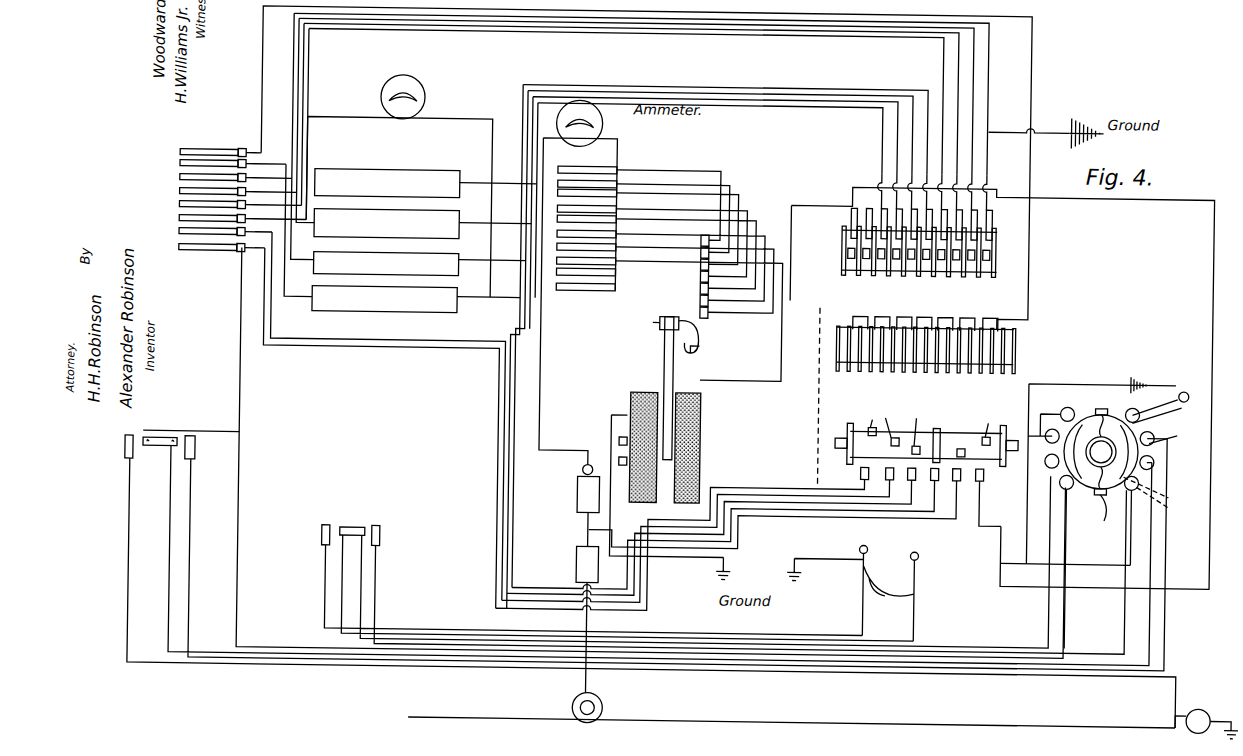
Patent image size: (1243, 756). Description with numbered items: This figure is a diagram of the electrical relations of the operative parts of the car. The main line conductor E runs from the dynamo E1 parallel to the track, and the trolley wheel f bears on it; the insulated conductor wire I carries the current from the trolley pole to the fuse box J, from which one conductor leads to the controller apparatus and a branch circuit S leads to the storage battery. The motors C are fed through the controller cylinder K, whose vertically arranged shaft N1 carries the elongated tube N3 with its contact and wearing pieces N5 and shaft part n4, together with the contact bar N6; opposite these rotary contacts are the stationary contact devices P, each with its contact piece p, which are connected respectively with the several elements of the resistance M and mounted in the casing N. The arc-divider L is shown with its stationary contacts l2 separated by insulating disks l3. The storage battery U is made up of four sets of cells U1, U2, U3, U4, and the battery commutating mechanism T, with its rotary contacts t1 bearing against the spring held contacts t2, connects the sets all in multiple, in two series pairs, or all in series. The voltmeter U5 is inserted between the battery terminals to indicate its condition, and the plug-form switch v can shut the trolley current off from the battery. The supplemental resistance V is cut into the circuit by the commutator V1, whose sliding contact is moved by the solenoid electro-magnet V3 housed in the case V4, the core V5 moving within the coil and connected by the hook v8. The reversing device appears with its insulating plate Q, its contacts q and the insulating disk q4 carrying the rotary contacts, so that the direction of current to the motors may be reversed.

The resistance M is at (224, 199).
The storage battery U is at (421, 194).
The cell set U1 is at (426, 184).
The cell set U2 is at (422, 224).
The cell set U3 is at (419, 264).
The cell set U4 is at (416, 300).
The voltmeter U5 is at (416, 97).
The supplemental resistance V is at (669, 262).
The commutator V1 is at (718, 300).
The electro-magnet V3 is at (667, 467).
The case V4 is at (699, 448).
The core V5 is at (663, 352).
The hook connection v8 is at (684, 322).
The switch or cut out device v is at (578, 492).
The branch circuit S is at (750, 432).
The fuse box J is at (587, 564).
The insulated conductor wire I is at (588, 622).
The trolley wheel f is at (578, 700).
The main line conductor E is at (800, 712).
The dynamo E1 is at (1195, 704).
The motor C is at (254, 462).
The battery commutating mechanism T is at (1004, 250).
The rotary contacts t1 is at (952, 274).
The spring held contacts t2 is at (992, 254).
The arc-divider L is at (1008, 343).
The stationary contacts l2 is at (925, 316).
The insulating disk l3 is at (843, 372).
The shaft N1 is at (830, 440).
The controller cylinder K is at (837, 406).
The cylinder shaft n4 is at (927, 426).
The contact bar N6 is at (933, 433).
The elongated tube N3 is at (965, 424).
The contact and wearing piece N5 is at (924, 447).
The stationary contact device P is at (864, 475).
The contact piece p is at (923, 469).
The casing N is at (1111, 506).
The insulating plate Q is at (1164, 407).
The insulating disk q4 is at (1167, 433).
The contact q is at (1100, 508).